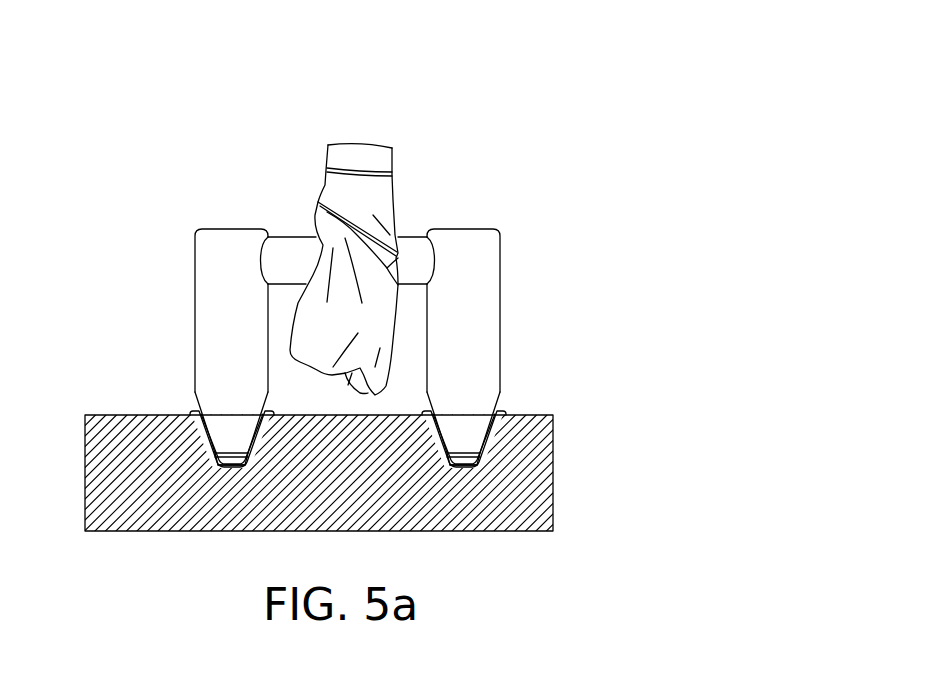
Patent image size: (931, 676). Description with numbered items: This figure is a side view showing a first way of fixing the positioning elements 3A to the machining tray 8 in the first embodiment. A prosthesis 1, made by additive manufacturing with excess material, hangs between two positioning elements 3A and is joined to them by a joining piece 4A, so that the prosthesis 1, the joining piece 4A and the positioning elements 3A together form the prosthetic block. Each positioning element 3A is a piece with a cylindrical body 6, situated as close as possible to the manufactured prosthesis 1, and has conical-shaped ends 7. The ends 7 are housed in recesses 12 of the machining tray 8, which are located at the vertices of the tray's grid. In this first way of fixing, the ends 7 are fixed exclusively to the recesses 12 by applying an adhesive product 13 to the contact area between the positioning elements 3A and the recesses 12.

The positioning element 3A is at (217, 247).
The joining piece 4A is at (292, 253).
The cylindrical body 6 is at (468, 305).
The prosthesis 1 is at (375, 313).
The conical-shaped end 7 is at (227, 412).
The adhesive product 13 is at (210, 438).
The recess 12 is at (228, 468).
The machining tray 8 is at (513, 492).